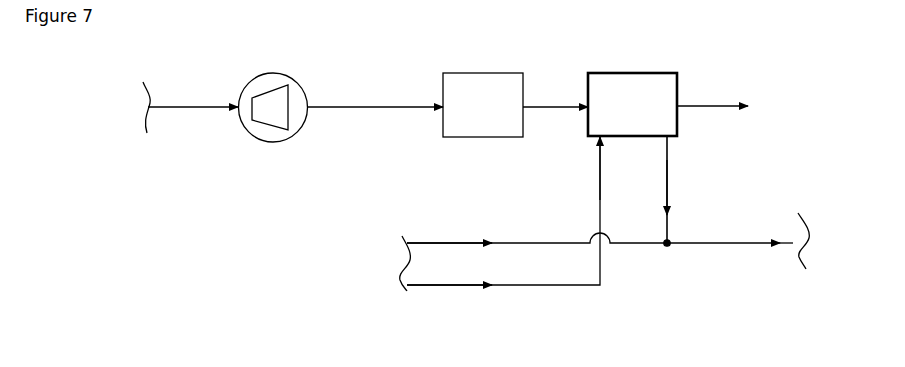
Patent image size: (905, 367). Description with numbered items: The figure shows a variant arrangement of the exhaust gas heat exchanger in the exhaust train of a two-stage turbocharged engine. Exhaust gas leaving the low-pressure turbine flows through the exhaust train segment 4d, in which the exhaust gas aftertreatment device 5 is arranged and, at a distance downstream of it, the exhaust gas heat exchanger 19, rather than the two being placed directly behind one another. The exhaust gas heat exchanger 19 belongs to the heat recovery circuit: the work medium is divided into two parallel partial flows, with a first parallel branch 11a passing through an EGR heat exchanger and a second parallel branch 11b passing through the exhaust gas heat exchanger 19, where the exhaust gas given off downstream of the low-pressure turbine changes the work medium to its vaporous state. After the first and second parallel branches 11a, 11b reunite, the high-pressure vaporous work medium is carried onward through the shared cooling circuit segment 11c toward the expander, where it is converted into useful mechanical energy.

The exhaust train segment 4d is at (378, 103).
The exhaust gas aftertreatment device 5 is at (483, 105).
The exhaust gas heat exchanger 19 is at (632, 104).
The first parallel branch 11a is at (567, 240).
The second parallel branch 11b is at (568, 285).
The cooling circuit segment 11c is at (738, 245).